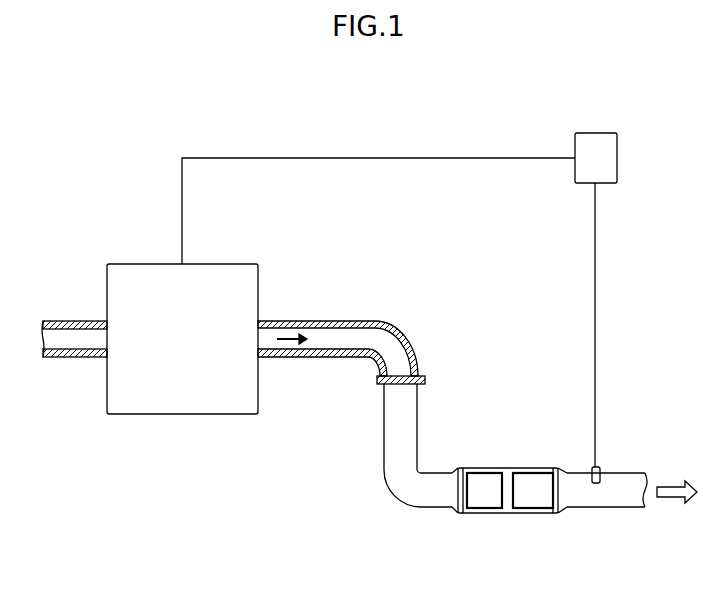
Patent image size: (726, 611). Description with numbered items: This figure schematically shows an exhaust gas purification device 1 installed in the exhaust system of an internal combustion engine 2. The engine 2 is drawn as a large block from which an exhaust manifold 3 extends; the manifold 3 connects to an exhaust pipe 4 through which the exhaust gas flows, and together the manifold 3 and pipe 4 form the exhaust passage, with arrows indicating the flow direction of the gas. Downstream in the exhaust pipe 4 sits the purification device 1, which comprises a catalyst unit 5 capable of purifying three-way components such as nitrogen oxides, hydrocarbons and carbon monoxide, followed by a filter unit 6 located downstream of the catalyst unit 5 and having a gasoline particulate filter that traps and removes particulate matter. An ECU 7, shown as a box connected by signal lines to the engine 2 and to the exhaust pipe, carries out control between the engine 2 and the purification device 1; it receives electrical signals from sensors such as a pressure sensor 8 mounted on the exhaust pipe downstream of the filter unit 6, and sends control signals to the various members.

The exhaust gas purification device 1 is at (549, 494).
The internal combustion engine 2 is at (236, 256).
The exhaust manifold 3 is at (343, 320).
The exhaust pipe 4 is at (383, 425).
The catalyst unit 5 is at (485, 467).
The filter unit 6 is at (533, 467).
The ECU 7 is at (617, 150).
The pressure sensor 8 is at (596, 483).